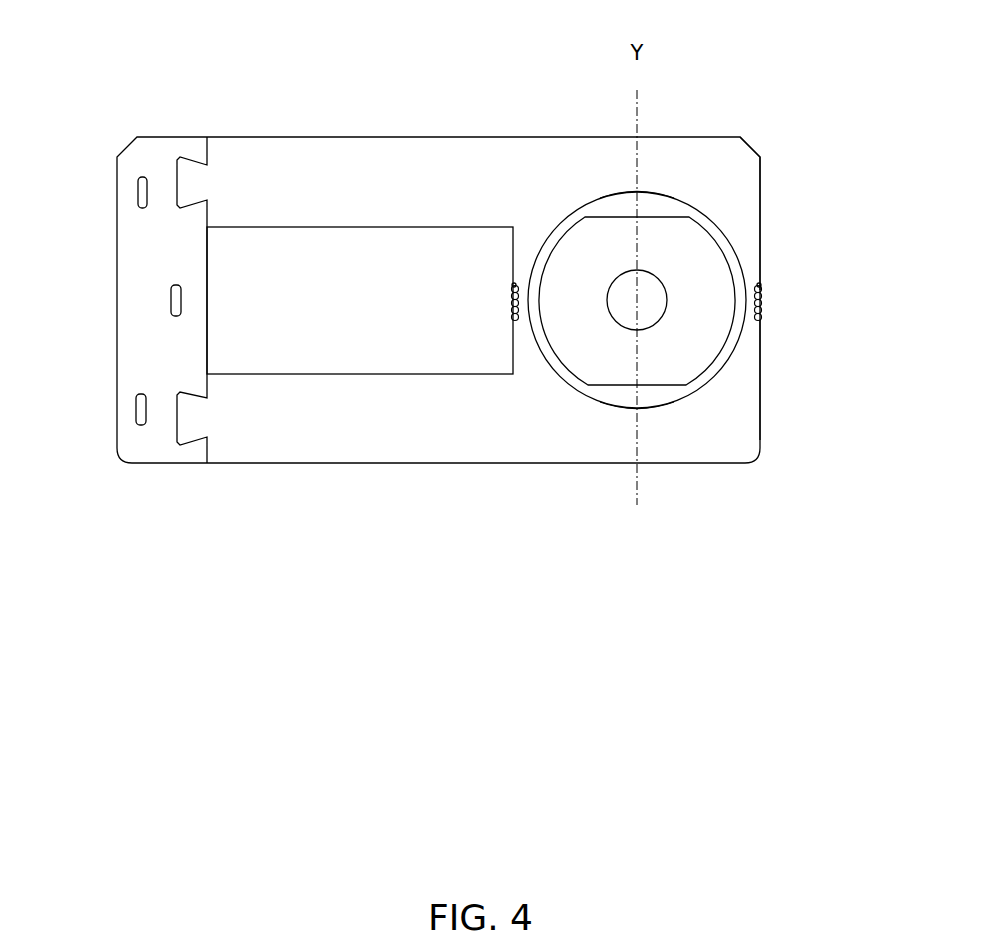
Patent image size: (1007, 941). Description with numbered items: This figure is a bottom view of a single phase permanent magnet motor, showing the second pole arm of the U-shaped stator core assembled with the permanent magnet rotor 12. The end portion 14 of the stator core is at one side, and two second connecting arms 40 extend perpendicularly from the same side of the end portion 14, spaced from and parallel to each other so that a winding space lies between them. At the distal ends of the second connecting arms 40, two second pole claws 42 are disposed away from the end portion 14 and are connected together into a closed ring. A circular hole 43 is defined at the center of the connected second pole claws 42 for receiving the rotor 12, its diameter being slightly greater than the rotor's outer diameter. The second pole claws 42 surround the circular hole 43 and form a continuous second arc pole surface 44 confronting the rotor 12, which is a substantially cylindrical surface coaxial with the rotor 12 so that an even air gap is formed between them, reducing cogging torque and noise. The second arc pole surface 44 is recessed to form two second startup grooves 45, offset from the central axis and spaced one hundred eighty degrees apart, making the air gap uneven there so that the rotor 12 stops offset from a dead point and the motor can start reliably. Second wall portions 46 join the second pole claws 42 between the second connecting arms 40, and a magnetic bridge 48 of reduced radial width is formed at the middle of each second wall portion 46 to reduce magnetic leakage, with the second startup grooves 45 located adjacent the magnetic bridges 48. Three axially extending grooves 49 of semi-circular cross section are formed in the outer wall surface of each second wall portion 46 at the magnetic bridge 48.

The permanent magnet rotor 12 is at (695, 362).
The end portion 14 is at (137, 258).
The second connecting arm 40 is at (303, 172).
The second pole claw 42 is at (668, 163).
The circular hole 43 is at (620, 203).
The second arc pole surface 44 is at (619, 408).
The second startup groove 45 is at (728, 227).
The second wall portion 46 is at (511, 365).
The magnetic bridge 48 is at (514, 285).
The groove 49 is at (513, 302).